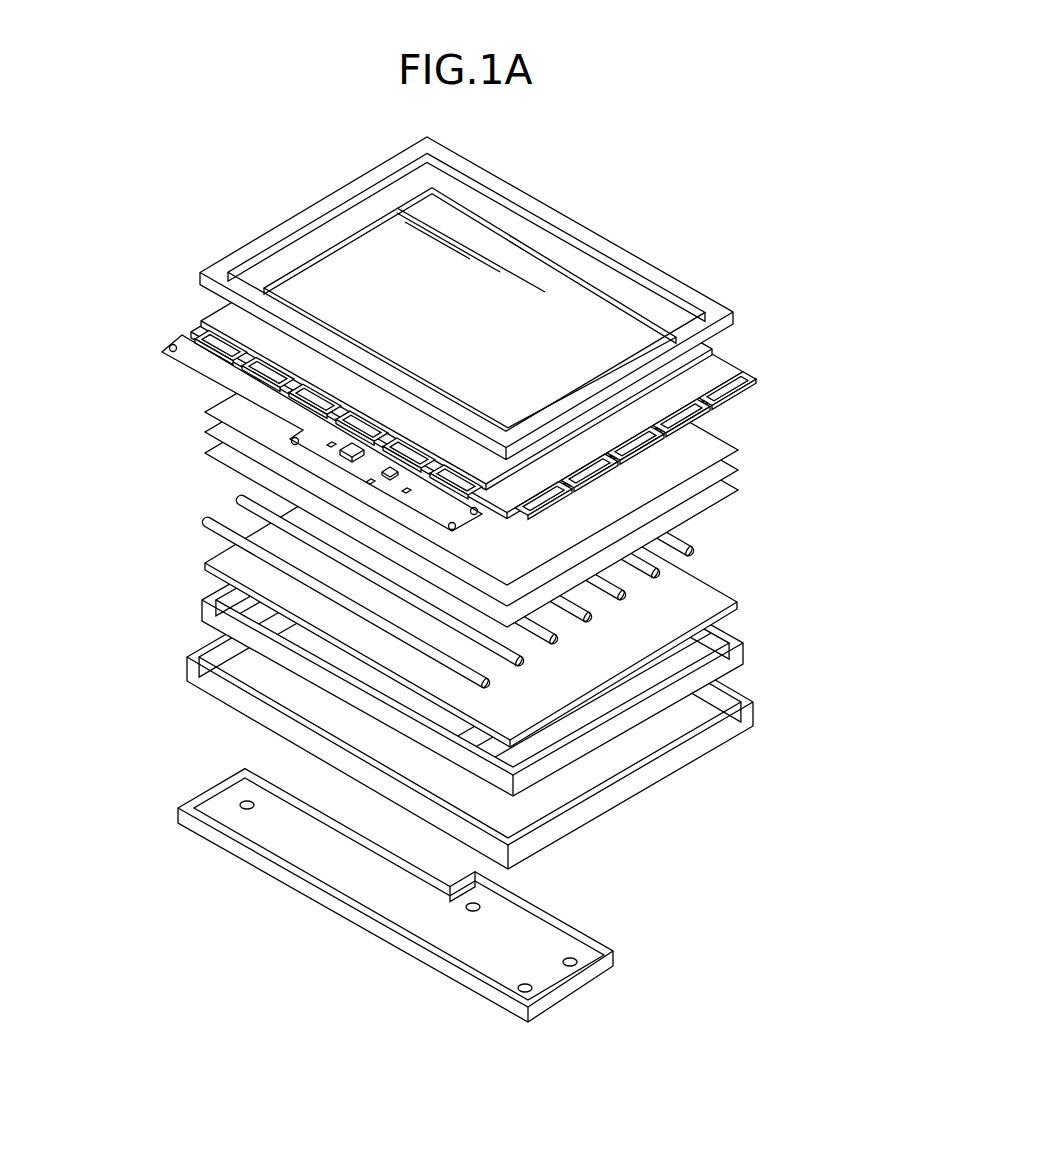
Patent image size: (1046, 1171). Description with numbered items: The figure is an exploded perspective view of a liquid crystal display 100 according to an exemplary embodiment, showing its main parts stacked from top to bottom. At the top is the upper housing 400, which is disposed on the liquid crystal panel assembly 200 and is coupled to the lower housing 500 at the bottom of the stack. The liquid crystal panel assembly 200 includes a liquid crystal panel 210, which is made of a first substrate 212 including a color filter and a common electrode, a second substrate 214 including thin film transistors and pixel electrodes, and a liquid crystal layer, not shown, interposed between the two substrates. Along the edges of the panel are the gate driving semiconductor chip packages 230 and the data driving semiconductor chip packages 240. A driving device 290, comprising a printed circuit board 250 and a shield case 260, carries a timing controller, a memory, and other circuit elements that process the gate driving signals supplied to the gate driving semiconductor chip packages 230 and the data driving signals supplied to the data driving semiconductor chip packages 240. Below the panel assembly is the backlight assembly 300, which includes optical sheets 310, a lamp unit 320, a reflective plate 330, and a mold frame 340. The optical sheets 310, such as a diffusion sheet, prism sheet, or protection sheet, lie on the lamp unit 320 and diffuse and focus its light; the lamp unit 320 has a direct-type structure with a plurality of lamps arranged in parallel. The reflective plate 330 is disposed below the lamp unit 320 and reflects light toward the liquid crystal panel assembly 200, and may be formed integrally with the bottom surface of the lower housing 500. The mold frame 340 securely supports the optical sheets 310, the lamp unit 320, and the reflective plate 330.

The liquid crystal display 100 is at (610, 173).
The liquid crystal panel assembly 200 is at (80, 283).
The liquid crystal panel 210 is at (125, 262).
The first substrate 212 is at (203, 323).
The second substrate 214 is at (193, 333).
The gate driving semiconductor chip packages 230 is at (748, 381).
The data driving semiconductor chip packages 240 is at (188, 351).
The printed circuit board 250 is at (184, 357).
The shield case 260 is at (243, 792).
The driving device 290 is at (80, 413).
The backlight assembly 300 is at (843, 455).
The optical sheets 310 is at (752, 437).
The lamp unit 320 is at (690, 548).
The reflective plate 330 is at (708, 596).
The mold frame 340 is at (738, 645).
The upper housing 400 is at (703, 292).
The lower housing 500 is at (745, 718).